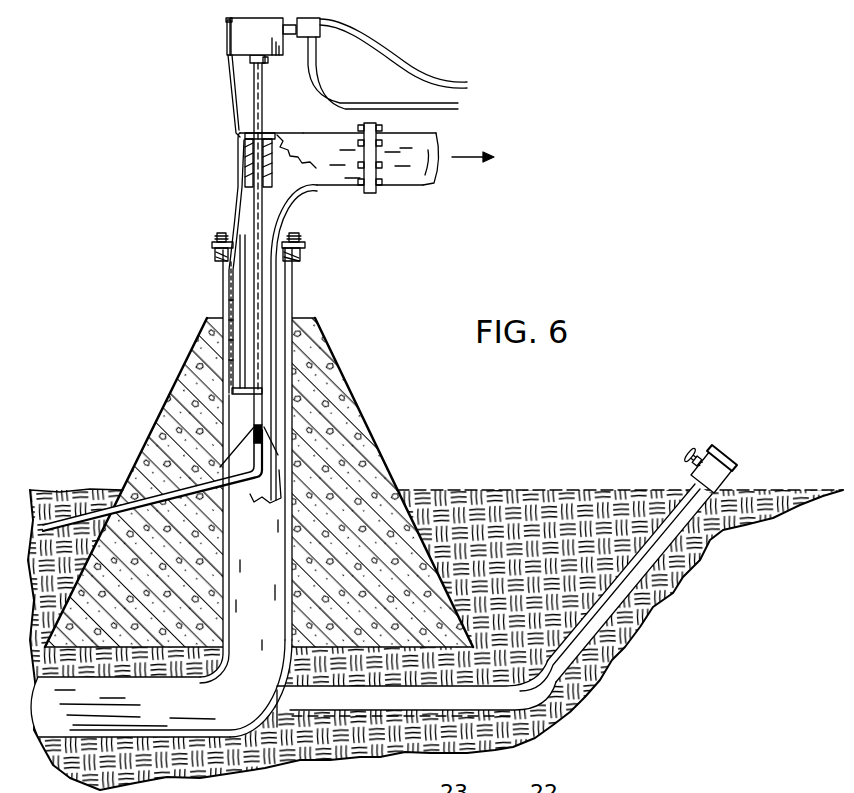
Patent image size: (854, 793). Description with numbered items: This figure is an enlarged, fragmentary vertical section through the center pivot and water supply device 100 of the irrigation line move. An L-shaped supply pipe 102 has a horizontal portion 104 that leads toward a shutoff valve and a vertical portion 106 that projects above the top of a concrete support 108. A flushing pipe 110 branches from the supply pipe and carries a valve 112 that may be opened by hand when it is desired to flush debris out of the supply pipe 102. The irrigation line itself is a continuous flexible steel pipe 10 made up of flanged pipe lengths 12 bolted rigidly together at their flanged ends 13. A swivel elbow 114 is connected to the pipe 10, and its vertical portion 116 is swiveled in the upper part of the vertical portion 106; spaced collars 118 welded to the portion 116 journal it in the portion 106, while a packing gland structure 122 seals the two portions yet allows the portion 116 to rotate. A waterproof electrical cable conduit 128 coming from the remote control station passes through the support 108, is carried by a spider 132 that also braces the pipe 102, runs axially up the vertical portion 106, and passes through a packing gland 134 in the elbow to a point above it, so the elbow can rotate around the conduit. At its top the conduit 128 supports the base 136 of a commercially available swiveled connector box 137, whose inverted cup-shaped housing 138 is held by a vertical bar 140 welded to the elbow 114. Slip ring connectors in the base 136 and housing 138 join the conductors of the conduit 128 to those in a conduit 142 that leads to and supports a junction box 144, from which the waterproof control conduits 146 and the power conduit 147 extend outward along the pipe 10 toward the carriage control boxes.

The flexible steel pipe 10 is at (403, 192).
The flanged pipe length 12 is at (425, 187).
The flanged end 13 is at (368, 192).
The center pivot and water supply device 100 is at (178, 230).
The L-shaped supply pipe 102 is at (279, 730).
The horizontal portion 104 is at (90, 728).
The vertical portion 106 is at (280, 567).
The concrete support 108 is at (317, 367).
The flushing pipe 110 is at (663, 553).
The valve 112 is at (734, 449).
The swivel elbow 114 is at (316, 194).
The vertical portion 116 is at (279, 303).
The spaced collars 118 is at (230, 383).
The packing gland structure 122 is at (220, 234).
The waterproof electrical cable conduit 128 is at (250, 405).
The spider 132 is at (236, 483).
The packing gland 134 is at (267, 133).
The base 136 is at (264, 61).
The swiveled connector box 137 is at (219, 50).
The inverted cup-shaped housing 138 is at (226, 27).
The vertical bar 140 is at (231, 96).
The conduit 142 is at (283, 31).
The junction box 144 is at (354, 33).
The control conduits 146 is at (428, 84).
The power conduit 147 is at (458, 106).